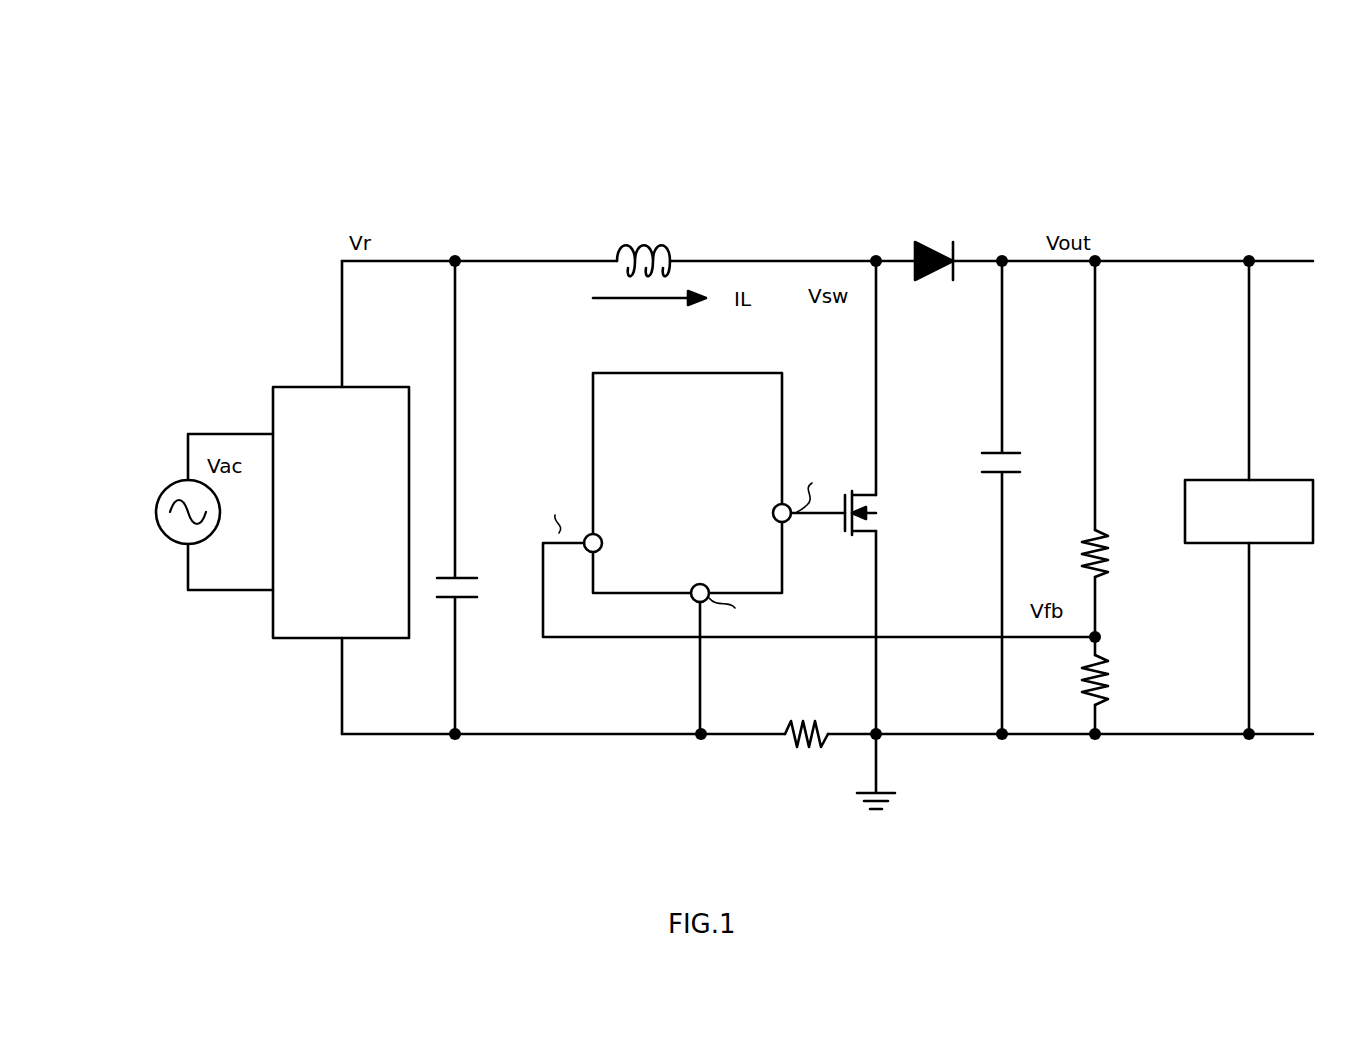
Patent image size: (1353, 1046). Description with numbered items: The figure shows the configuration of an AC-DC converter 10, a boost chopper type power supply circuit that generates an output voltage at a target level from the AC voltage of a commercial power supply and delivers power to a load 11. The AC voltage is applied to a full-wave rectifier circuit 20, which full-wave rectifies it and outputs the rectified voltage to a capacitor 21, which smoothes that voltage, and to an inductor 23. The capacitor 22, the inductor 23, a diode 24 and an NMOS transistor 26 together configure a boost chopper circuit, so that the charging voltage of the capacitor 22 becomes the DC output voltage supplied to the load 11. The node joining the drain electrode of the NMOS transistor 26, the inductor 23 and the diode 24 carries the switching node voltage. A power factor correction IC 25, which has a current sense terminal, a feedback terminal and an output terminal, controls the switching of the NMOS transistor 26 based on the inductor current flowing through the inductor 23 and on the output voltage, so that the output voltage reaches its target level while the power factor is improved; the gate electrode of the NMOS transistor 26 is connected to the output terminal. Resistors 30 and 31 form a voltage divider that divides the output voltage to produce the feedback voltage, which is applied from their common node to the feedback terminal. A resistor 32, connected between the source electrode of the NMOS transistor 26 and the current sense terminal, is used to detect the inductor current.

The AC-DC converter 10 is at (1130, 148).
The load 11 is at (1275, 478).
The full-wave rectifier circuit 20 is at (283, 387).
The capacitor 21 is at (435, 600).
The capacitor 22 is at (1016, 448).
The inductor 23 is at (666, 246).
The diode 24 is at (940, 247).
The power factor correction IC 25 is at (608, 372).
The NMOS transistor 26 is at (884, 533).
The resistor 30 is at (1108, 545).
The resistor 31 is at (1108, 675).
The resistor 32 is at (812, 752).